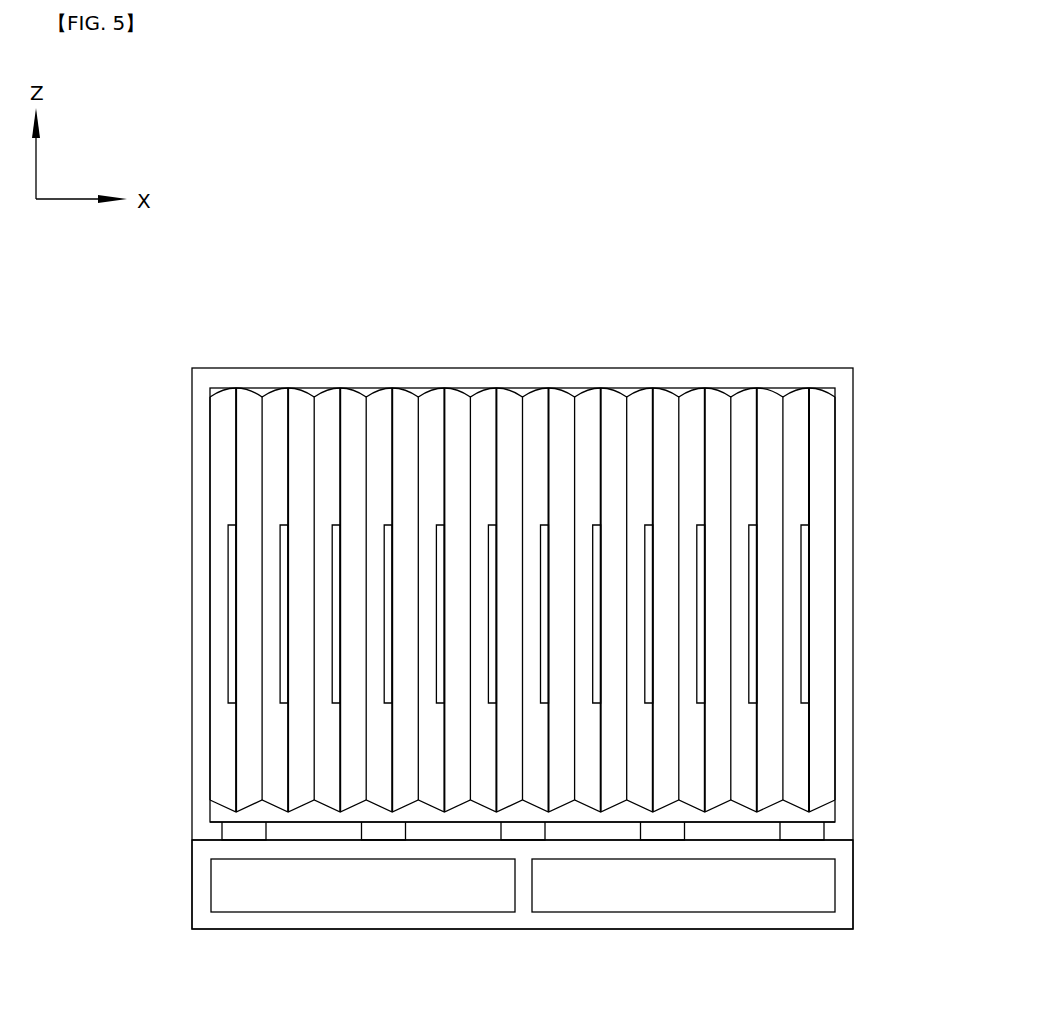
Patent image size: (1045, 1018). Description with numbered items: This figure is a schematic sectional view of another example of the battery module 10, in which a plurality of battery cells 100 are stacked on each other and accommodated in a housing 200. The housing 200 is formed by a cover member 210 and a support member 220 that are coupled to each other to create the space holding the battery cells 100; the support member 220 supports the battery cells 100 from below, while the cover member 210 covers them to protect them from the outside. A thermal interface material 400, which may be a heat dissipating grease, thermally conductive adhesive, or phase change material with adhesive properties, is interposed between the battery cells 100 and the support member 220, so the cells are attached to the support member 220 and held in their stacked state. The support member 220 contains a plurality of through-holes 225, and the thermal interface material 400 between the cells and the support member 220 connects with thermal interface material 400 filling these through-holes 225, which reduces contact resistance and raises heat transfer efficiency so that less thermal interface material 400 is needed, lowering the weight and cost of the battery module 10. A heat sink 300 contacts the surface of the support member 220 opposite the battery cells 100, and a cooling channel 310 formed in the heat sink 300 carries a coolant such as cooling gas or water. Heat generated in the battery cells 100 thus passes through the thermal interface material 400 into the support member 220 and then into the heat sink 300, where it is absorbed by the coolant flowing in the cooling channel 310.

The battery module 10 is at (263, 298).
The battery cells 100 is at (592, 458).
The housing 200 is at (93, 689).
The cover member 210 is at (193, 697).
The support member 220 is at (195, 750).
The through-holes 225 is at (512, 830).
The heat sink 300 is at (200, 888).
The cooling channel 310 is at (344, 895).
The thermal interface material 400 is at (262, 810).